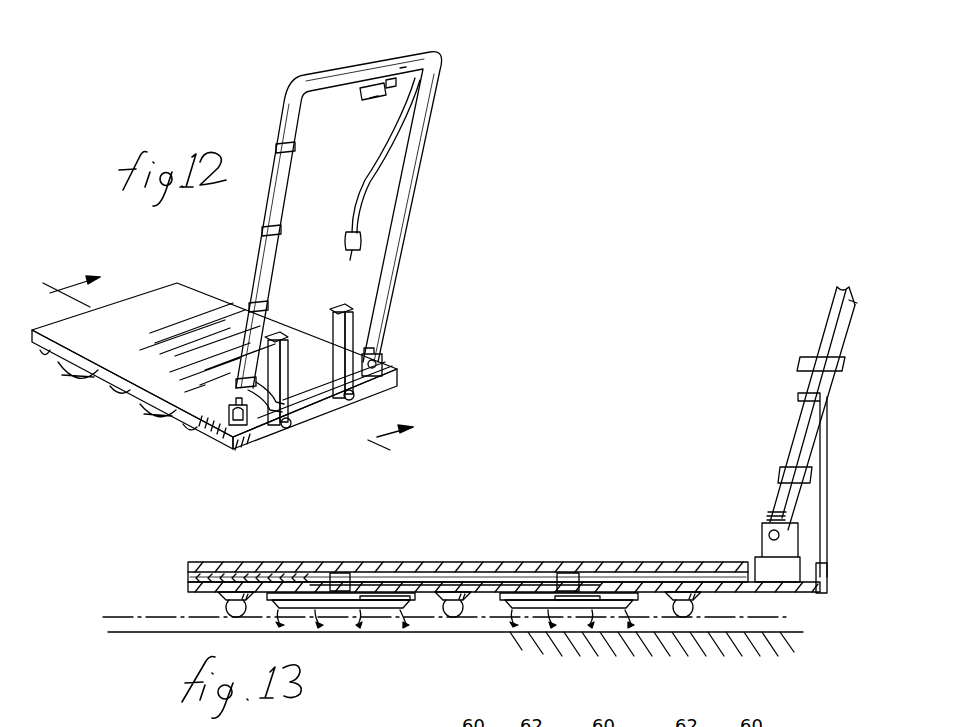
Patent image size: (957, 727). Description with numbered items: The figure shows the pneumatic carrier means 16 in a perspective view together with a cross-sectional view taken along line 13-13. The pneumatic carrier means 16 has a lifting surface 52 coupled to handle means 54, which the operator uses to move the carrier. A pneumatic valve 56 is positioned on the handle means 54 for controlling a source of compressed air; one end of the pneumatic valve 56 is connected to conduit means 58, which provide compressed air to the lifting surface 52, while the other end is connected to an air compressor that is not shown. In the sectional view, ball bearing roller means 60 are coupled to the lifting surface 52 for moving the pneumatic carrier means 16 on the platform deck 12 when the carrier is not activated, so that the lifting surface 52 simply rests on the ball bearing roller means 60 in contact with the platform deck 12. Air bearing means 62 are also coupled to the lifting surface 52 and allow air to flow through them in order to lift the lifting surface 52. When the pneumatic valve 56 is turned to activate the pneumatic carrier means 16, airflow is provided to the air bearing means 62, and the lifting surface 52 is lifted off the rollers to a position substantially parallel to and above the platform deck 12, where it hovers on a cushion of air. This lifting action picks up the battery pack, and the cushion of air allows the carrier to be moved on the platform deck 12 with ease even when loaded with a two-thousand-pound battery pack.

In FIG. 13, the platform deck 12 is at (125, 617).
In FIG. 12, the section line 13- 13 is at (242, 355).
In FIG. 12, the pneumatic carrier means 16 is at (335, 224).
In FIG. 12, the lifting surface 52 is at (168, 378).
In FIG. 12, the handle means 54 is at (436, 52).
In FIG. 12, the pneumatic valve 56 is at (372, 76).
In FIG. 12, the conduit means 58 is at (285, 108).
In FIG. 13, the ball bearing roller means 60 is at (228, 612).
In FIG. 13, the air bearing means 62 is at (342, 610).